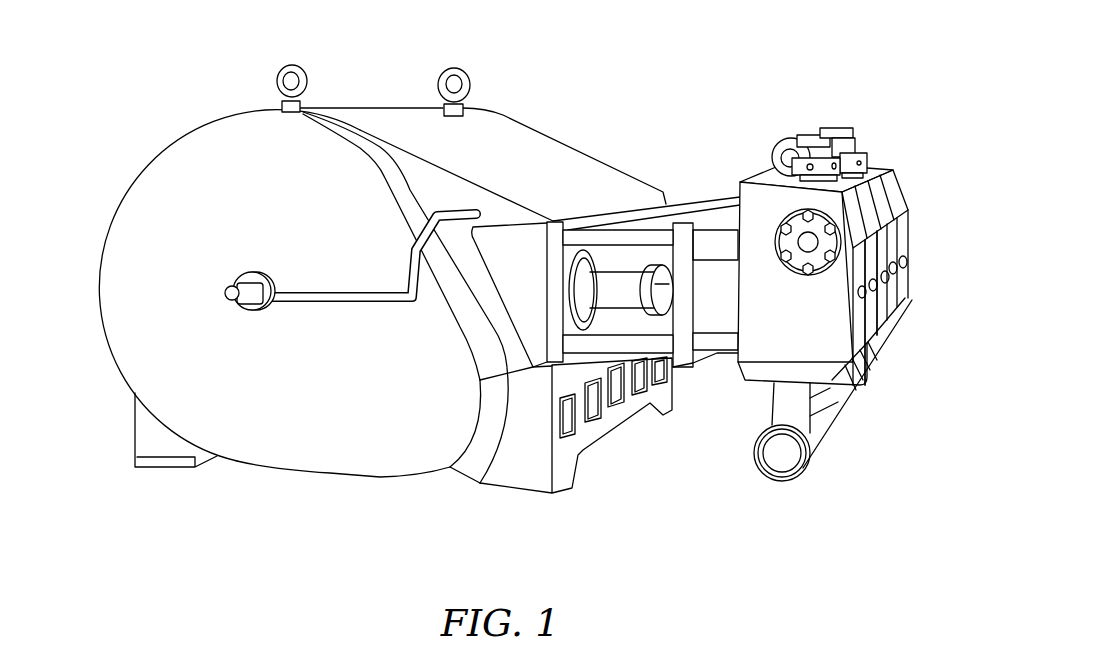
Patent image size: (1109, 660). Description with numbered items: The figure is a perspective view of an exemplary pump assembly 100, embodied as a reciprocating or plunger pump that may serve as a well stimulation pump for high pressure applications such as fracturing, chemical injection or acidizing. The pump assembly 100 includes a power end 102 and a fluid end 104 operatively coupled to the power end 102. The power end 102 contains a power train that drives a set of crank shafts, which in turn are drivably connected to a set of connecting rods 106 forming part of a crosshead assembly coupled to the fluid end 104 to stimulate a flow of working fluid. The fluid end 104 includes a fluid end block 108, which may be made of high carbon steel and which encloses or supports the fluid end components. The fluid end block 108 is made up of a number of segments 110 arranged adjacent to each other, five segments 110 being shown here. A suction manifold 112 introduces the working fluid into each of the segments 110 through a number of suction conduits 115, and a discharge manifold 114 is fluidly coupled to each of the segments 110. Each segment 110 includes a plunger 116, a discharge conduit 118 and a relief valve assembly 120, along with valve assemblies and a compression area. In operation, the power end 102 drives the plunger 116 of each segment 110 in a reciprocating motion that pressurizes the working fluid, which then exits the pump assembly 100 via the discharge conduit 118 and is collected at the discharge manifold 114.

The pump assembly 100 is at (876, 50).
The power end 102 is at (137, 127).
The fluid end 104 is at (752, 150).
The connecting rods 106 is at (633, 292).
The fluid end block 108 is at (906, 160).
The segments 110 is at (890, 300).
The suction manifold 112 is at (797, 492).
The discharge manifold 114 is at (903, 187).
The suction conduits 115 is at (843, 405).
The plunger 116 is at (667, 292).
The discharge conduit 118 is at (798, 243).
The relief valve assembly 120 is at (896, 278).